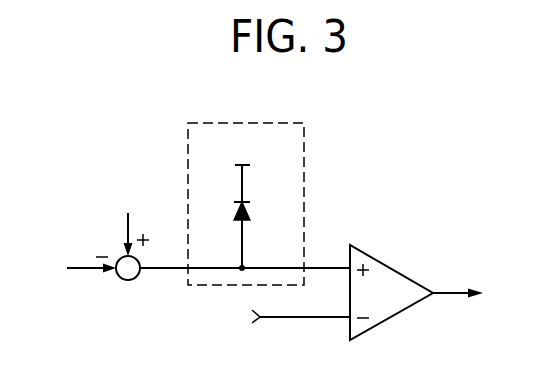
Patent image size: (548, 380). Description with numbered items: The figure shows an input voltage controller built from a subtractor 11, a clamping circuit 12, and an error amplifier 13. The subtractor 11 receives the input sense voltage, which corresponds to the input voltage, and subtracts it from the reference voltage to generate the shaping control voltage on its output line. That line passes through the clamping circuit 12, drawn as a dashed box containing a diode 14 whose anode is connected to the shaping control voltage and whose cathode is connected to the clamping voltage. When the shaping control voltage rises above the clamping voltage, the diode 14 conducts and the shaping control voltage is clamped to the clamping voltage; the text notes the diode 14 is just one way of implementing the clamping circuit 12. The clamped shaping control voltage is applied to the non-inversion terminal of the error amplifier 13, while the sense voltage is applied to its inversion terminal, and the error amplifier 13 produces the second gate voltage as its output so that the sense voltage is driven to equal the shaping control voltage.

The subtractor 11 is at (128, 280).
The clamping circuit 12 is at (305, 166).
The error amplifier 13 is at (395, 317).
The diode 14 is at (249, 207).